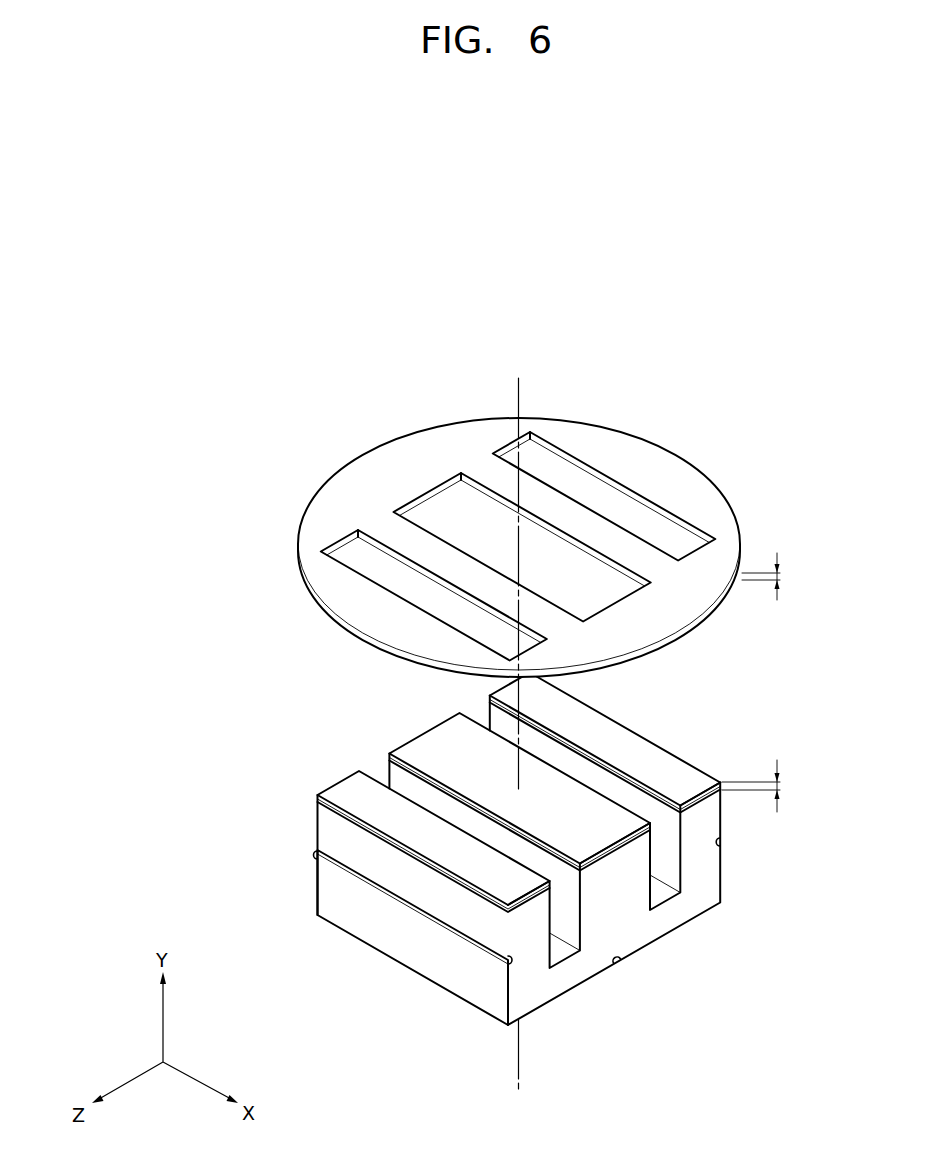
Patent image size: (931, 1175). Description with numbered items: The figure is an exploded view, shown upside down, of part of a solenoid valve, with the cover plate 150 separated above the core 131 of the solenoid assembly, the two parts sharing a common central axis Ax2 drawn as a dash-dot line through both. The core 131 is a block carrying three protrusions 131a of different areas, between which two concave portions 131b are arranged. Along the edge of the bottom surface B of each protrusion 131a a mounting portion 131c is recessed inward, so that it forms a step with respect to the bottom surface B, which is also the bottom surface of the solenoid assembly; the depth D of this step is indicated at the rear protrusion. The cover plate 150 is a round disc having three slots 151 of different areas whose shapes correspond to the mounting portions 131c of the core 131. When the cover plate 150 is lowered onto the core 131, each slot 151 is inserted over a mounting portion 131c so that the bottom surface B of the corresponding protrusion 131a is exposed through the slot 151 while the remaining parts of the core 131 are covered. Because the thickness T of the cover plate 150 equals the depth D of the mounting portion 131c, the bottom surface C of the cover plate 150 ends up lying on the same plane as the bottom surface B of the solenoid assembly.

The cover plate 150 is at (482, 547).
The slot 151 is at (595, 511).
The core 131 is at (483, 853).
The protrusion 131a is at (617, 905).
The concave portion 131b is at (556, 956).
The mounting portion 131c is at (388, 754).
The bottom surface B is at (618, 750).
The bottom surface of the cover plate C is at (700, 500).
The depth of the mounting portion D is at (760, 786).
The thickness of the cover plate T is at (769, 576).
The central axis Ax2 is at (519, 721).